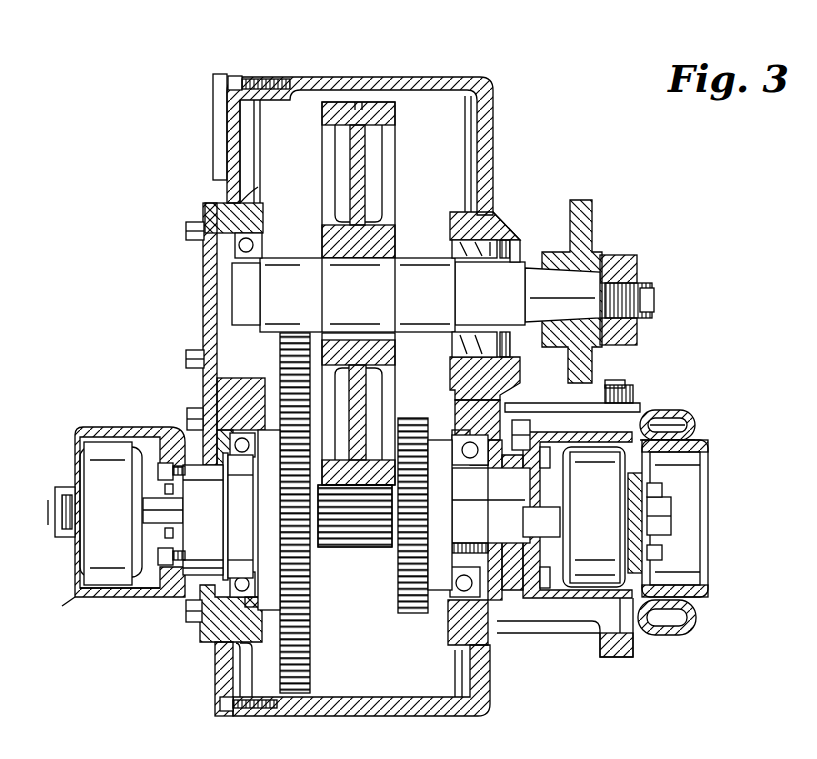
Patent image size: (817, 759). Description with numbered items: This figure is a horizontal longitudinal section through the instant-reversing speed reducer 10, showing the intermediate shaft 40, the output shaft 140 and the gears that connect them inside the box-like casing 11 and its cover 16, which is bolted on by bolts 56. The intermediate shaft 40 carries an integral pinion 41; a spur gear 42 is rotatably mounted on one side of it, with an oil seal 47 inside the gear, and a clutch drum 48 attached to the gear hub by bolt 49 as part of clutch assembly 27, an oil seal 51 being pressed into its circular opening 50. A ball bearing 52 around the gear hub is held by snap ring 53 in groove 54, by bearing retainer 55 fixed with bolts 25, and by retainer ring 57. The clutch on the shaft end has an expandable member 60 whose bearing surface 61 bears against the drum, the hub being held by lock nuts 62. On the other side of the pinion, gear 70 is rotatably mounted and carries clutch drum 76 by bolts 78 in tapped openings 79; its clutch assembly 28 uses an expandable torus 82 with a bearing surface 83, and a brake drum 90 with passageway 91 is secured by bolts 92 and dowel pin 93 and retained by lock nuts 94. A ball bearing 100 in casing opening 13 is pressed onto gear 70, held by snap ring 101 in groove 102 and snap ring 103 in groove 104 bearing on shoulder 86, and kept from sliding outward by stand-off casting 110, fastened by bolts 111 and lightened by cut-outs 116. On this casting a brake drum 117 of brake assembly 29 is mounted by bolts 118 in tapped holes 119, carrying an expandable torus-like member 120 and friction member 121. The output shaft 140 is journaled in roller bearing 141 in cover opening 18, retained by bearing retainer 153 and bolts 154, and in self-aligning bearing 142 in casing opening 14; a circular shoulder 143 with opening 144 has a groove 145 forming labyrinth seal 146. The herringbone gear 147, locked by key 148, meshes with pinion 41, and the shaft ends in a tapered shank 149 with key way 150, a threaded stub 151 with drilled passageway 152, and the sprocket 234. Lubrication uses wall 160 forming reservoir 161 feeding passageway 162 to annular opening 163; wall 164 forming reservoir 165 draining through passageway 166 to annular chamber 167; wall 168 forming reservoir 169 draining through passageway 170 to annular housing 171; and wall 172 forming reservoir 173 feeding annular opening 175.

The instant-reversing speed reducer 10 is at (378, 76).
The casing 11 is at (480, 683).
The circular opening 13 is at (450, 614).
The circular opening 14 is at (452, 224).
The cover 16 is at (215, 680).
The circular opening 18 is at (262, 222).
The bolts 25 is at (190, 412).
The clutch assembly 27 is at (68, 600).
The clutch housing 28 is at (597, 600).
The brake assembly 29 is at (688, 641).
The intermediate shaft 40 is at (318, 548).
The integral pinion 41 is at (364, 548).
The spur gear 42 is at (308, 663).
The oil seal 47 is at (255, 438).
The clutch drum 48 is at (140, 598).
The bolt 49 is at (160, 564).
The circular opening 50 is at (175, 490).
The oil seal 51 is at (163, 510).
The ball bearing 52 is at (250, 585).
The snap ring 53 is at (228, 462).
The circular groove 54 is at (222, 512).
The bearing retainer 55 is at (205, 392).
The bolts 56 is at (235, 76).
The retainer ring 57 is at (255, 603).
The expandable member 60 is at (76, 540).
The bearing surface 61 is at (111, 513).
The lock nuts 62 is at (60, 490).
The gear 70 is at (398, 592).
The clutch drum 76 is at (565, 627).
The bolts 78 is at (551, 519).
The tapped openings 79 is at (522, 480).
The expandable torus 82 is at (565, 548).
The clutch drum 83 is at (594, 517).
The shoulder 86 is at (468, 436).
The brake drum 90 is at (716, 599).
The circular passageway 91 is at (638, 523).
The bolts 92 is at (655, 545).
The dowel pin 93 is at (644, 490).
The lock nuts 94 is at (671, 500).
The ball bearing 100 is at (455, 594).
The snap ring 101 is at (480, 505).
The external circular groove 102 is at (478, 523).
The snap ring 103 is at (478, 438).
The circular groove 104 is at (455, 436).
The stand-off casting 110 is at (498, 406).
The bolts 111 is at (530, 426).
The cut-outs 116 is at (522, 634).
The brake drum 117 is at (672, 410).
The bolts 118 is at (633, 398).
The tapped holes 119 is at (612, 380).
The expandable torus-like member 120 is at (694, 414).
The friction member 121 is at (695, 440).
The output shaft 140 is at (413, 334).
The roller bearing 141 is at (263, 246).
The self-aligning bearing 142 is at (455, 248).
The circular shoulder 143 is at (506, 250).
The opening 144 is at (518, 262).
The circular groove 145 is at (510, 266).
The labyrinth seal 146 is at (505, 332).
The gear 147 is at (392, 120).
The key 148 is at (340, 338).
The tapered shank 149 is at (536, 328).
The key way 150 is at (534, 296).
The threaded stub 151 is at (640, 285).
The diametrically drilled passageway 152 is at (654, 299).
The bearing retainer 153 is at (212, 303).
The bolts 154 is at (186, 232).
The wall 160 is at (465, 150).
The reservoir 161 is at (482, 160).
The passageway 162 is at (485, 218).
The annular opening 163 is at (490, 335).
The wall 164 is at (257, 138).
The reservoir 165 is at (246, 176).
The passageway 166 is at (242, 203).
The annular chamber 167 is at (240, 318).
The wall 168 is at (242, 675).
The reservoir 169 is at (246, 660).
The passageway 170 is at (215, 645).
The annular housing 171 is at (215, 570).
The wall 172 is at (452, 677).
The reservoir 173 is at (460, 655).
The annular opening 175 is at (480, 550).
The sprocket 234 is at (586, 207).